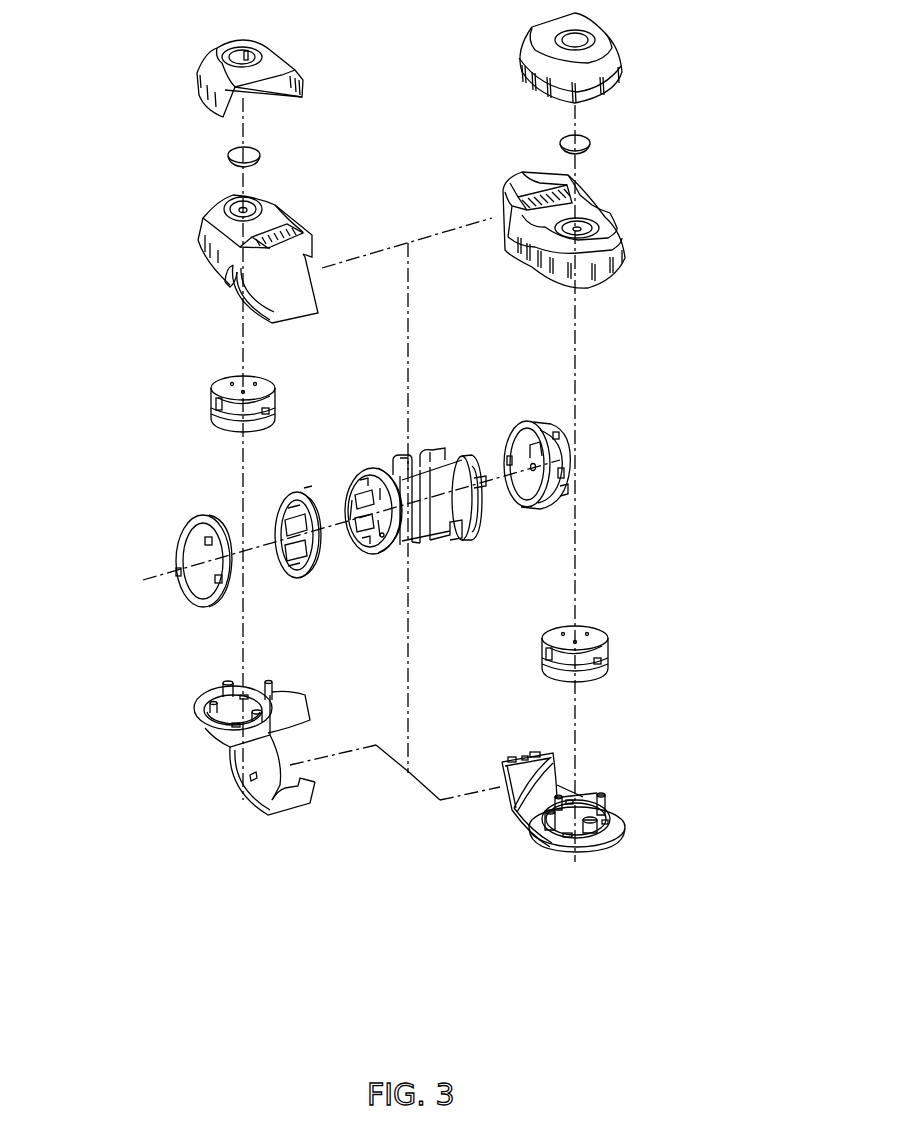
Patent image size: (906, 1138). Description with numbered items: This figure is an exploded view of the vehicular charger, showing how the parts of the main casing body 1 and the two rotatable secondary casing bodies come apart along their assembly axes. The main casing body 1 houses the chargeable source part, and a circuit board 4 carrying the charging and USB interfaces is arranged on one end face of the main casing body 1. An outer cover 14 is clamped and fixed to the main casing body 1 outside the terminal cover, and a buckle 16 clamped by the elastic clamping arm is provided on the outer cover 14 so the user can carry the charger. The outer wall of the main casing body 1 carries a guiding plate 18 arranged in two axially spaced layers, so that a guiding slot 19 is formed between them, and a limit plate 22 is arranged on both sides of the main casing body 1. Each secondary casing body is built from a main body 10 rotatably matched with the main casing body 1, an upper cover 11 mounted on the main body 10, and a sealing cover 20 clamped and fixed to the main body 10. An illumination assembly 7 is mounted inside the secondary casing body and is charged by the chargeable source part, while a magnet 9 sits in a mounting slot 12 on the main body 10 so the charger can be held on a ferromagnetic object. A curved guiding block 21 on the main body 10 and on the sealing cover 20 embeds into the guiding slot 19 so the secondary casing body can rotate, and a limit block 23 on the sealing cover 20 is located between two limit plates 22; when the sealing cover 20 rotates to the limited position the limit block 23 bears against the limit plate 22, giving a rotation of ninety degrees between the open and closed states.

The main casing body 1 is at (411, 456).
The circuit board 4 is at (358, 527).
The illumination assembly 7 is at (227, 405).
The magnet 9 is at (228, 155).
The main body 10 is at (193, 244).
The upper cover 11 is at (217, 70).
The mounting slot 12 is at (221, 203).
The outer cover 14 is at (548, 452).
The buckle 16 is at (572, 487).
The guiding plate 18 is at (388, 467).
The guiding slot 19 is at (432, 476).
The sealing cover 20 is at (568, 798).
The guiding block 21 is at (502, 780).
The limit plate 22 is at (458, 530).
The limit block 23 is at (235, 792).